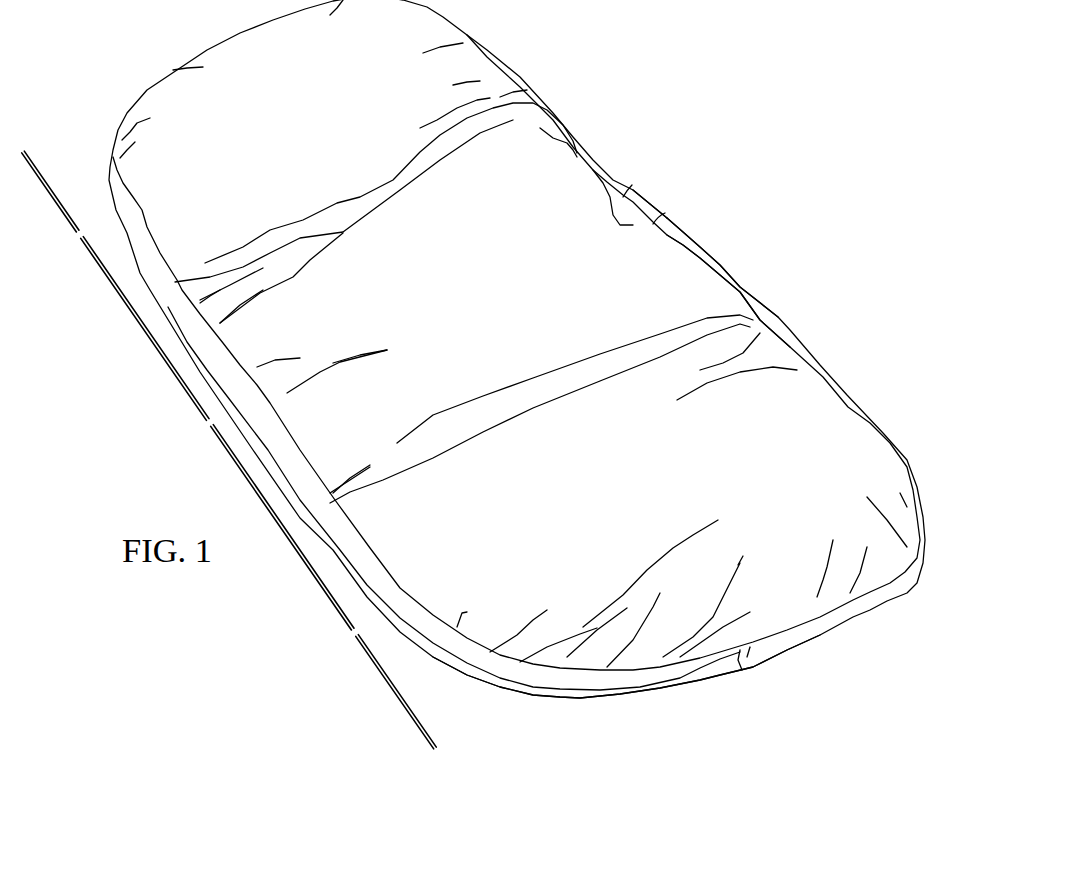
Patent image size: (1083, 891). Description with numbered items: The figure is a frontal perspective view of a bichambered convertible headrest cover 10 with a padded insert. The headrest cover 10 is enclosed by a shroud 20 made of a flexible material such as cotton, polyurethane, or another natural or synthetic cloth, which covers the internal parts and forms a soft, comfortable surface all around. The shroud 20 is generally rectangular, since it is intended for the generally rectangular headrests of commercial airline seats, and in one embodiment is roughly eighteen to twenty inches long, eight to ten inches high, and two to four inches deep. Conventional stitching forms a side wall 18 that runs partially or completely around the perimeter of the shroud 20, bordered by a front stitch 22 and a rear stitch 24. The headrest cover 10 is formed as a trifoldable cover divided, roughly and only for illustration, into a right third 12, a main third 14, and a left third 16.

The headrest cover 10 is at (715, 95).
The right third 12 is at (82, 240).
The main third 14 is at (212, 428).
The left third 16 is at (358, 640).
The side wall 18 is at (667, 680).
The shroud 20 is at (575, 196).
The front stitch 22 is at (658, 224).
The rear stitch 24 is at (704, 252).